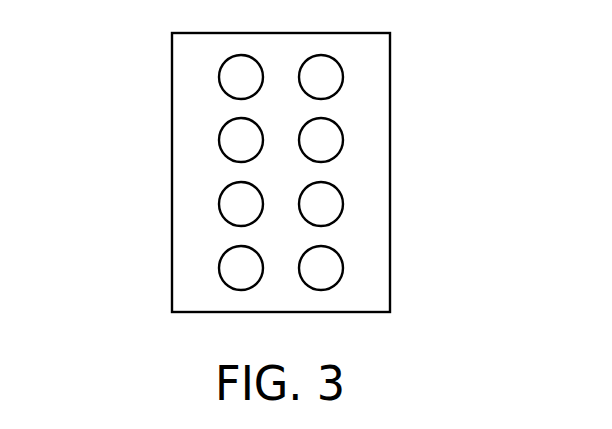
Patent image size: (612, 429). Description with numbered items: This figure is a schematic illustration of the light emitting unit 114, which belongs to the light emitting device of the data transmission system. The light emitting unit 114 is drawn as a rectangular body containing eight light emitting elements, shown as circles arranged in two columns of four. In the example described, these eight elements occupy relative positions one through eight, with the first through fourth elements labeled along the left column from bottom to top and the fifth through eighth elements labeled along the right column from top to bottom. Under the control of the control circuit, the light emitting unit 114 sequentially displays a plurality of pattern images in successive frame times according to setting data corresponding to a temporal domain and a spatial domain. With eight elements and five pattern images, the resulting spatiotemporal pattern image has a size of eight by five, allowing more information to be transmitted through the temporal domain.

The light emitting unit 114 is at (390, 303).